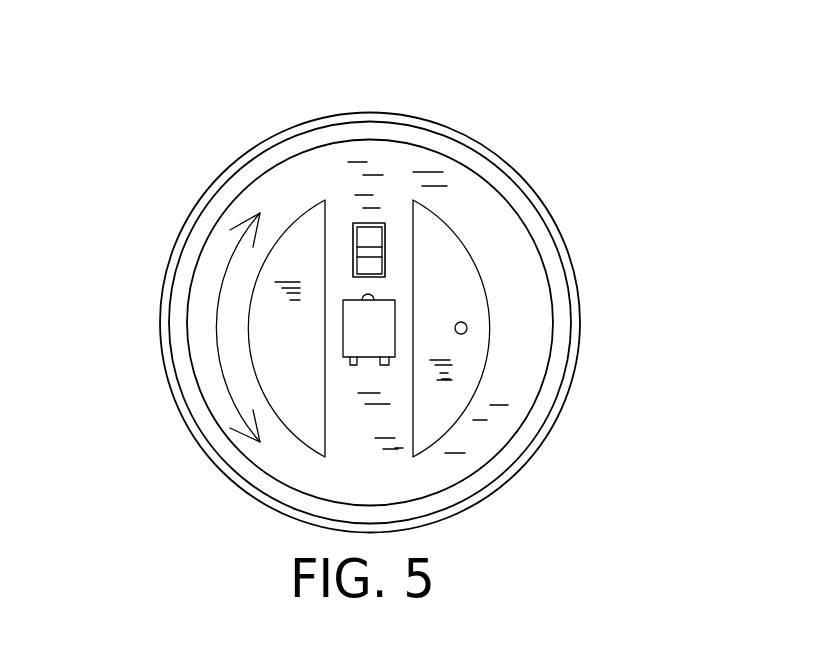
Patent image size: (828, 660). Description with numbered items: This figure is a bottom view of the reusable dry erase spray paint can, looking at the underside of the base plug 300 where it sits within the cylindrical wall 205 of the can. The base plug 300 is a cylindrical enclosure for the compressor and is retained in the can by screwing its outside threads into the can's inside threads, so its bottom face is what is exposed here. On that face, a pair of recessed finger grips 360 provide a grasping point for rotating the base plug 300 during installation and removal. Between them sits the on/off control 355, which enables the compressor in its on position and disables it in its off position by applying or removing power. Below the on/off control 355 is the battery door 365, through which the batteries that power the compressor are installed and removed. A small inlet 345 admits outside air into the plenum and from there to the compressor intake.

The cylindrical wall 205 is at (540, 200).
The base plug 300 is at (410, 167).
The inlet 345 is at (466, 325).
The on/off control 355 is at (353, 252).
The recessed finger grips 360 is at (308, 418).
The battery door 365 is at (347, 330).